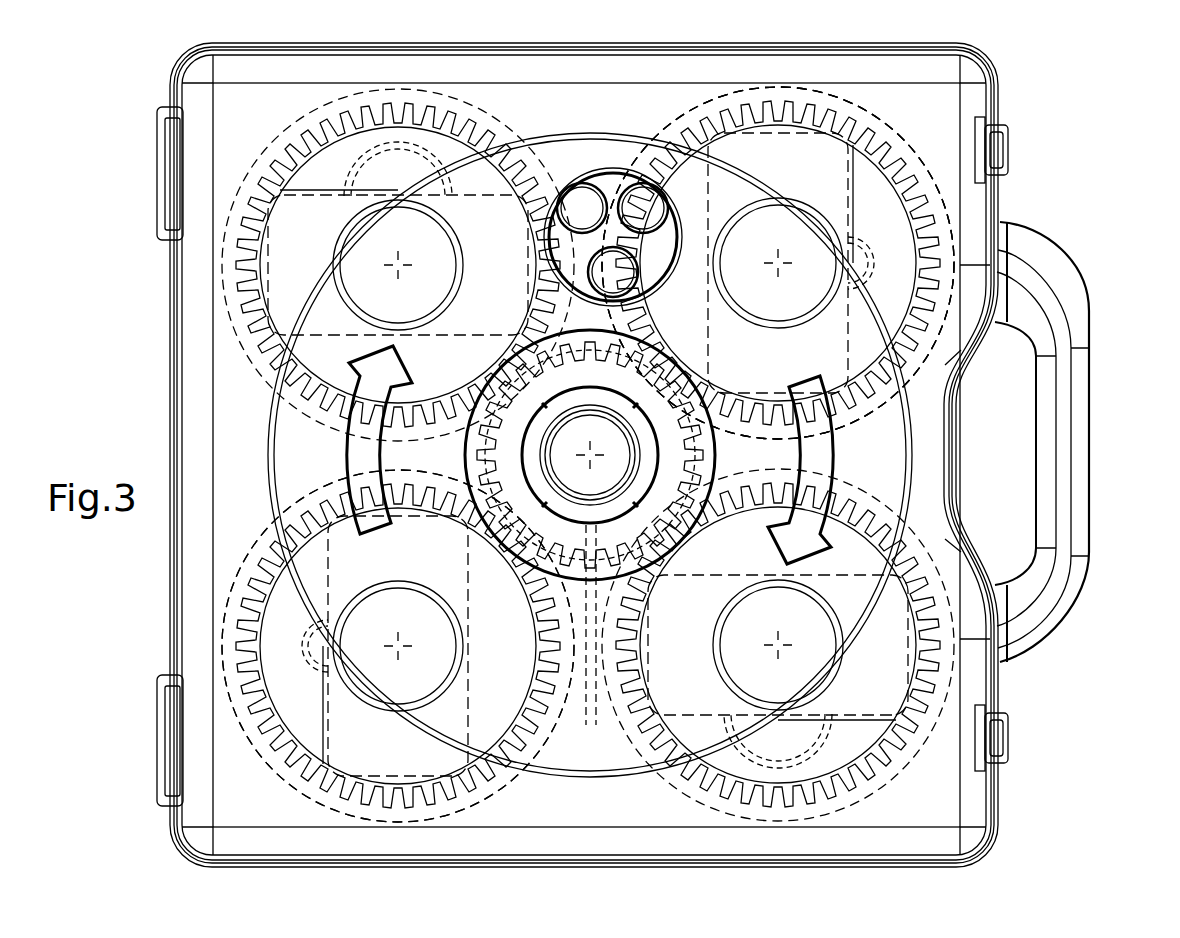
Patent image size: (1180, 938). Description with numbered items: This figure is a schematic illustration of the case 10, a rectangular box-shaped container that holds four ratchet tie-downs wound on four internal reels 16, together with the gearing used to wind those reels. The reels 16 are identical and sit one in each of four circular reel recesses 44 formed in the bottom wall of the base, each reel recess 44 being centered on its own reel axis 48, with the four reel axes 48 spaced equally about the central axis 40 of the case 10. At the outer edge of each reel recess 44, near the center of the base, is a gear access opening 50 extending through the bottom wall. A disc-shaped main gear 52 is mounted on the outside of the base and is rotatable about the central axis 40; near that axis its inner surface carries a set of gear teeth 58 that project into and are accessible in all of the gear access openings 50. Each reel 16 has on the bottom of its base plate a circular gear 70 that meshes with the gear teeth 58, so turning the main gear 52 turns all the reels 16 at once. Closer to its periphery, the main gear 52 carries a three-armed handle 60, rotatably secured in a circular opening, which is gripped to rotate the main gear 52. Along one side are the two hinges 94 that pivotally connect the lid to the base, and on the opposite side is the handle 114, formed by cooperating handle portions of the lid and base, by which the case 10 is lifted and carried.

The case 10 is at (1068, 168).
The reel 16 is at (333, 120).
The central axis 40 is at (630, 502).
The reel recess 44 is at (870, 95).
The reel axis 48 is at (400, 265).
The gear access opening 50 is at (875, 412).
The main gear 52 is at (266, 440).
The gear teeth 58 is at (591, 700).
The handle 60 is at (611, 168).
The circular gear 70 is at (375, 95).
The hinge 94 is at (167, 170).
The handle 114 is at (1063, 298).